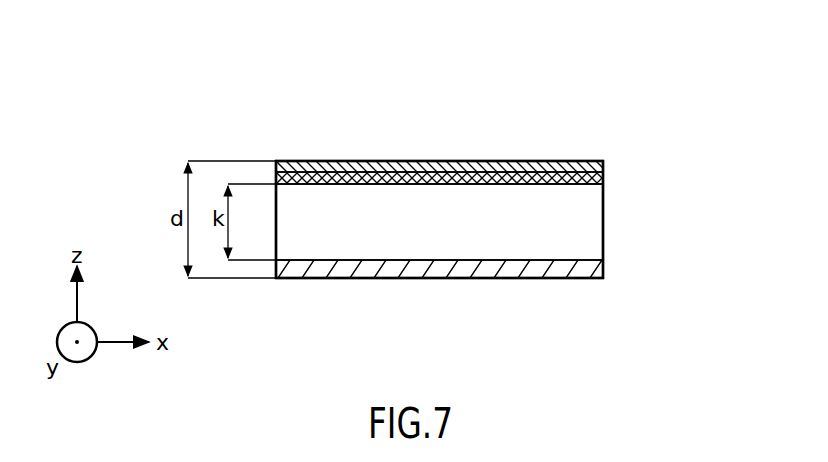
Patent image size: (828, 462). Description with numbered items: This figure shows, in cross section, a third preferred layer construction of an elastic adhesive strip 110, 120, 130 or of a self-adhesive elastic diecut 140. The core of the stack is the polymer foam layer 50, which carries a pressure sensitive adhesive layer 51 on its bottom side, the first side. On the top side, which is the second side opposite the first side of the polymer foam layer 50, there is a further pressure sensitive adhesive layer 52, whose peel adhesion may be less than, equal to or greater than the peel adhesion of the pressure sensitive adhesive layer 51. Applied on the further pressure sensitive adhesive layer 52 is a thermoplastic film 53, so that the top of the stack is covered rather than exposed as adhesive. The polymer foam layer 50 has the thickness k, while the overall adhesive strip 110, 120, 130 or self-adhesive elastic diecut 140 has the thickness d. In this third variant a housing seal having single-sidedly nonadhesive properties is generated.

The elastic adhesive strip 110 is at (283, 143).
The elastic adhesive strip 120 is at (439, 219).
The elastic adhesive strip 130 is at (439, 219).
The self-adhesive elastic diecut 140 is at (439, 219).
The polymer foam layer 50 is at (603, 233).
The pressure sensitive adhesive layer 51 is at (603, 263).
The further pressure sensitive adhesive layer 52 is at (603, 178).
The thermoplastic film 53 is at (603, 165).